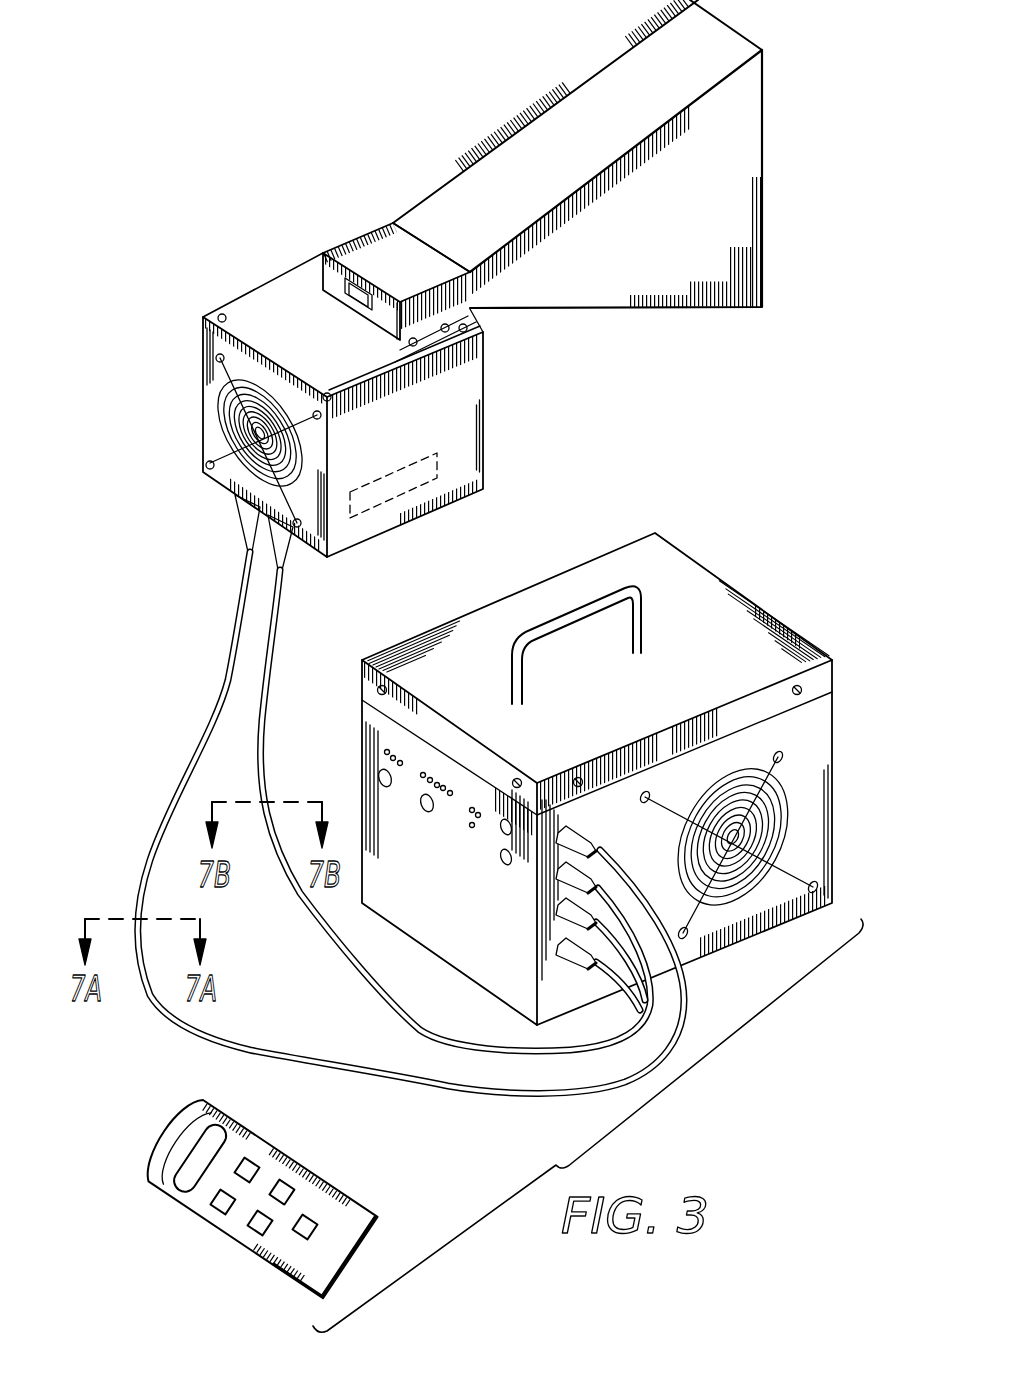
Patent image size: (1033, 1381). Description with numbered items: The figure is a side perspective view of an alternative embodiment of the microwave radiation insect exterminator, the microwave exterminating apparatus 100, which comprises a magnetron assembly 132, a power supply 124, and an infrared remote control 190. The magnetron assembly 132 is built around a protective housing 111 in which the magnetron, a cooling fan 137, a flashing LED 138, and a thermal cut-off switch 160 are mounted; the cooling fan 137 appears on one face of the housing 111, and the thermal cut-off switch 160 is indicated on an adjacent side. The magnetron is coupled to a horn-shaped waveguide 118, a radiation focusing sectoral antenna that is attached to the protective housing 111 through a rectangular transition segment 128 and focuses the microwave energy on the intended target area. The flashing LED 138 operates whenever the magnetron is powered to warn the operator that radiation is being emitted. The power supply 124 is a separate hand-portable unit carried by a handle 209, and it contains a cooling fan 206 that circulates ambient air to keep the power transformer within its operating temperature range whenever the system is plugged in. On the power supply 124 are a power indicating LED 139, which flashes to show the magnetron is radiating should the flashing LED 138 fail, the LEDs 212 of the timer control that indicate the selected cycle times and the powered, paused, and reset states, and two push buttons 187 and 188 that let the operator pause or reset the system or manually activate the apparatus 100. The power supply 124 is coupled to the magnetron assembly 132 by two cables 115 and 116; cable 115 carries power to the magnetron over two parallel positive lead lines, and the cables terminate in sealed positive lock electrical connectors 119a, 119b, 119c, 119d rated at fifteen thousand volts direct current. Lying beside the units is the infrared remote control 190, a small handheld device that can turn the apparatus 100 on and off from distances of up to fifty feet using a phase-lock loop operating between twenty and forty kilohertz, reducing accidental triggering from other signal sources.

The microwave exterminating apparatus 100 is at (168, 291).
The horn-shaped waveguide 118 is at (588, 74).
The rectangular transition segment 128 is at (401, 276).
The flashing LED 138 is at (352, 286).
The protective housing 111 is at (486, 353).
The magnetron assembly 132 is at (192, 385).
The cooling fan 137 is at (232, 470).
The thermal cut-off switch 160 is at (438, 468).
The cable 115 is at (203, 725).
The cable 116 is at (300, 903).
The LEDs 212 is at (438, 770).
The push button 187 is at (380, 790).
The push button 188 is at (425, 814).
The power indicating LED 139 is at (472, 830).
The handle 209 is at (580, 610).
The power supply 124 is at (750, 585).
The cooling fan 206 is at (783, 787).
The electrical connector 119a is at (590, 826).
The electrical connector 119b is at (556, 884).
The electrical connector 119c is at (556, 922).
The electrical connector 119d is at (553, 962).
The infrared remote control 190 is at (162, 1135).